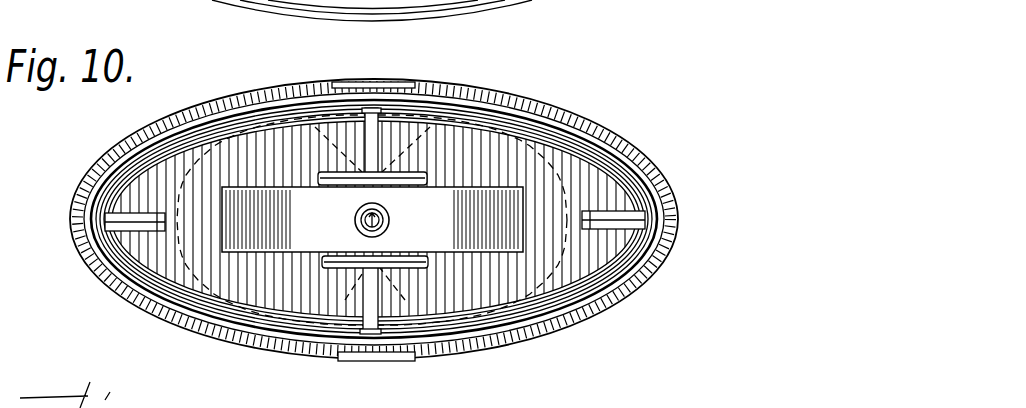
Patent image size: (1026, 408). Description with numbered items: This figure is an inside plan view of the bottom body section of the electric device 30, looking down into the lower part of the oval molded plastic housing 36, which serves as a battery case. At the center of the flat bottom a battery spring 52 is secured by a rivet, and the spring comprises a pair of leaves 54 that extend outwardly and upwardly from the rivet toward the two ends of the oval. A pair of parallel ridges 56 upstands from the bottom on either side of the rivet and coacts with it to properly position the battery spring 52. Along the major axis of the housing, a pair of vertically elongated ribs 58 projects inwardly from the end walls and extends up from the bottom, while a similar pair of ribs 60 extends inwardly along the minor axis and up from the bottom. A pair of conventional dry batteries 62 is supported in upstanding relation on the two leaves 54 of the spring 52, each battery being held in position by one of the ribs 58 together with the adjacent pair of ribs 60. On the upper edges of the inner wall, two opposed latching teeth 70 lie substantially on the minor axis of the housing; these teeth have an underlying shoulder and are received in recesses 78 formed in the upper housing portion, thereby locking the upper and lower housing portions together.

The electric device 30 is at (84, 276).
The housing 36 is at (136, 128).
The battery spring 52 is at (284, 183).
The leaves 54 is at (238, 243).
The parallel ridges 56 is at (424, 178).
The vertically elongated ribs 58 is at (150, 232).
The ribs 60 is at (372, 135).
The dry batteries 62 is at (592, 133).
The latching teeth 70 is at (398, 83).
The recesses 78 is at (651, 287).